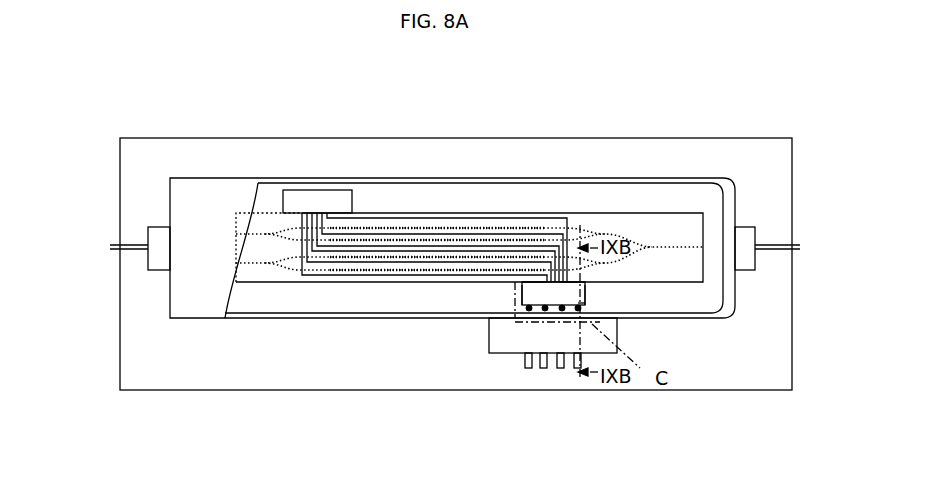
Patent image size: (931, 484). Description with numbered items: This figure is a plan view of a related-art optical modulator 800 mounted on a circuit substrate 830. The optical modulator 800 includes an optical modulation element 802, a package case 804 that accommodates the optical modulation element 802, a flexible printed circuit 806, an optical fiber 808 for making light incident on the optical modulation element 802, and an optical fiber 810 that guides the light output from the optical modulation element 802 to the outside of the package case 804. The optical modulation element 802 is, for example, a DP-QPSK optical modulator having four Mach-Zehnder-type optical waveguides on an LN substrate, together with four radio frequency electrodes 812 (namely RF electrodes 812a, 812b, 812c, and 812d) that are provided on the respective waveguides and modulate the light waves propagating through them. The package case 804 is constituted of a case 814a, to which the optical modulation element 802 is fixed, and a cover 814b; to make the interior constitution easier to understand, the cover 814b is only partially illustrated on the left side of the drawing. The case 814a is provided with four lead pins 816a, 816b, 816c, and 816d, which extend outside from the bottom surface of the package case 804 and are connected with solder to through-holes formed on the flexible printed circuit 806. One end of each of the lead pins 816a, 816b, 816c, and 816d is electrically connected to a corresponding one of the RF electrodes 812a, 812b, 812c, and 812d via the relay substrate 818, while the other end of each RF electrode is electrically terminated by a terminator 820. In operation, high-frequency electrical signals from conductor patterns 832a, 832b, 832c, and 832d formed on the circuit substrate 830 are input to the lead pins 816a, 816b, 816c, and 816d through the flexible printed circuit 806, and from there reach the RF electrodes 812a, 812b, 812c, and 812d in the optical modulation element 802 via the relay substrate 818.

The optical modulator 800 is at (208, 109).
The optical modulation element 802 is at (598, 213).
The package case 804 is at (474, 192).
The flexible printed circuit 806 is at (489, 328).
The optical fiber 808 is at (768, 247).
The optical fiber 810 is at (120, 242).
The radio frequency electrodes 812 is at (524, 285).
The radio frequency electrode 812a is at (575, 283).
The radio frequency electrode 812b is at (586, 295).
The radio frequency electrode 812c is at (522, 290).
The radio frequency electrode 812d is at (520, 283).
The case 814a is at (285, 183).
The cover 814b is at (242, 192).
The lead pin 816a is at (578, 309).
The lead pin 816b is at (562, 309).
The lead pin 816c is at (545, 309).
The lead pin 816d is at (529, 309).
The relay substrate 818 is at (585, 303).
The terminator 820 is at (343, 197).
The circuit substrate 830 is at (458, 138).
The conductor pattern 832a is at (577, 368).
The conductor pattern 832b is at (560, 368).
The conductor pattern 832c is at (543, 368).
The conductor pattern 832d is at (528, 368).